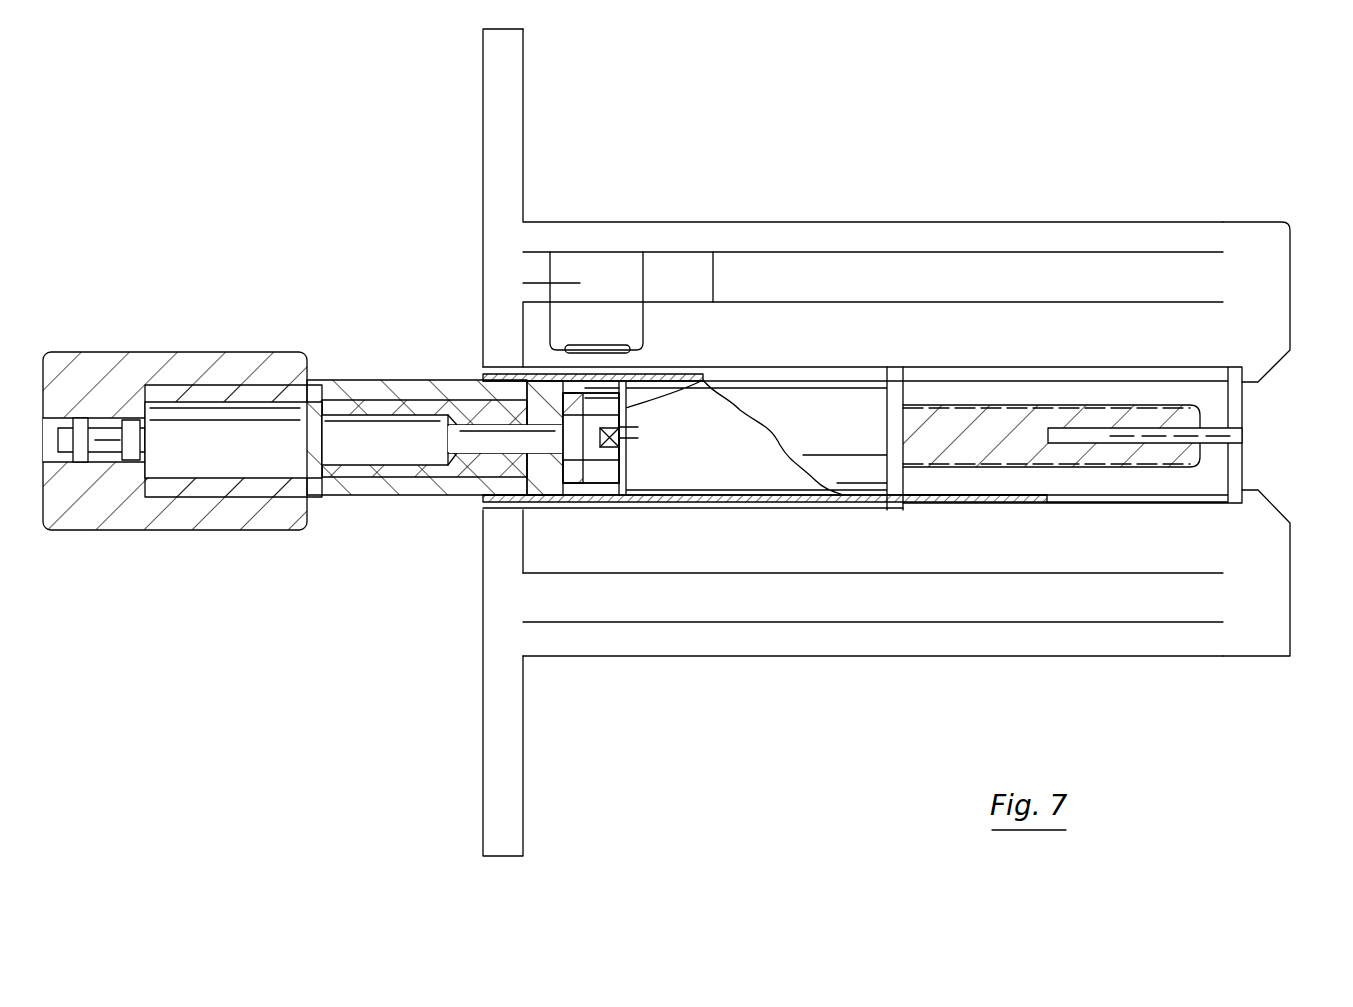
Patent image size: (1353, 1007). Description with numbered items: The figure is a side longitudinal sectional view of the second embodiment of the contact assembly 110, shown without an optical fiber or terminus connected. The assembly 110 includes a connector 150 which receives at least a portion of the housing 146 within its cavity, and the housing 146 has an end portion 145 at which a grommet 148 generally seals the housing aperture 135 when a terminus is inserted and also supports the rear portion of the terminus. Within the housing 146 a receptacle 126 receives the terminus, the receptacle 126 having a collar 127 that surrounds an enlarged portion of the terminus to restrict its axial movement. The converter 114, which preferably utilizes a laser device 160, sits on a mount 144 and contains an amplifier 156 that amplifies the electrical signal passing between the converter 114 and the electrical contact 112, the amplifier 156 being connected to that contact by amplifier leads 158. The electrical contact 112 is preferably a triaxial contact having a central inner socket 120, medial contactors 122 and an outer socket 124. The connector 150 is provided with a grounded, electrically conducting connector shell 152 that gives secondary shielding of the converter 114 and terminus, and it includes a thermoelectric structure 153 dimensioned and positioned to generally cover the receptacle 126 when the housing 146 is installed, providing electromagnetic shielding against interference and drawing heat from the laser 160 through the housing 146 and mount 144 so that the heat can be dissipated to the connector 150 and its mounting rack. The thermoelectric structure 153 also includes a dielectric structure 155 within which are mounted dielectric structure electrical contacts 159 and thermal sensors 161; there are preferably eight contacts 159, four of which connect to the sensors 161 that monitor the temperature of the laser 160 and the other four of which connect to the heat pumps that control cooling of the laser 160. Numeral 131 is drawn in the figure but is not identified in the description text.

The contact assembly 110 is at (690, 440).
The electrical contact 112 is at (1030, 502).
The converter 114 is at (628, 378).
The inner socket 120 is at (1212, 434).
The medial contactors 122 is at (1173, 447).
The outer socket 124 is at (977, 497).
The receptacle 126 is at (362, 418).
The collar 127 is at (527, 400).
The sleeve 131 is at (403, 475).
The housing aperture 135 is at (155, 438).
The mount 144 is at (572, 500).
The end portion 145 is at (188, 386).
The housing 146 is at (773, 506).
The grommet 148 is at (183, 362).
The connector 150 is at (1263, 216).
The connector shell 152 is at (856, 128).
The thermoelectric structure 153 is at (918, 600).
The dielectric structure 155 is at (695, 271).
The amplifier 156 is at (625, 457).
The amplifier leads 158 is at (654, 458).
The dielectric structure electrical contacts 159 is at (578, 283).
The laser device 160 is at (640, 432).
The thermal sensors 161 is at (611, 345).